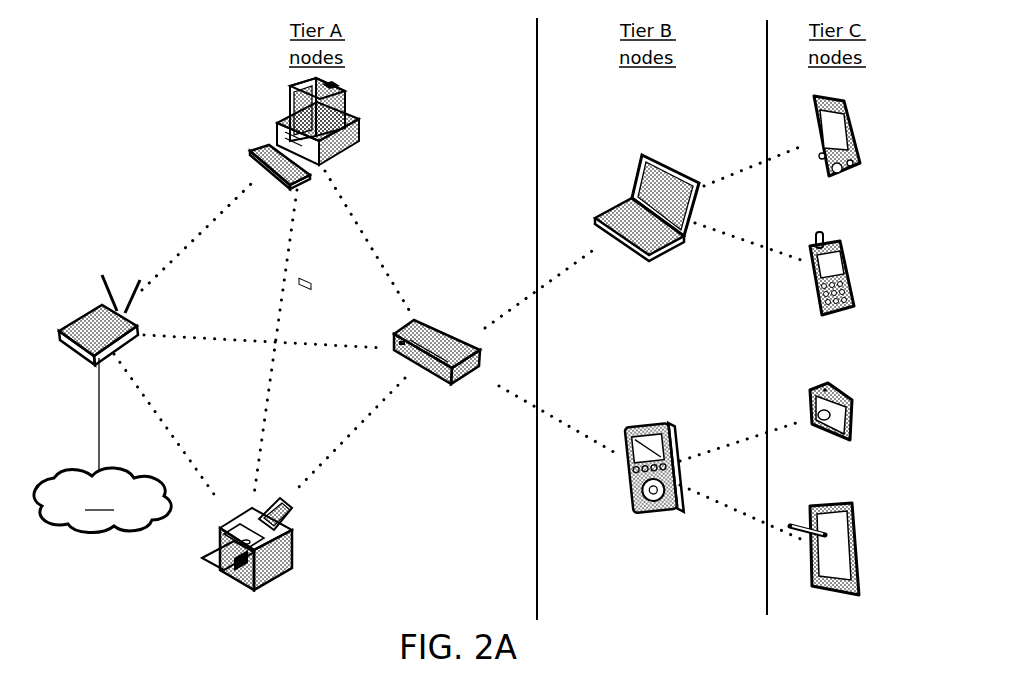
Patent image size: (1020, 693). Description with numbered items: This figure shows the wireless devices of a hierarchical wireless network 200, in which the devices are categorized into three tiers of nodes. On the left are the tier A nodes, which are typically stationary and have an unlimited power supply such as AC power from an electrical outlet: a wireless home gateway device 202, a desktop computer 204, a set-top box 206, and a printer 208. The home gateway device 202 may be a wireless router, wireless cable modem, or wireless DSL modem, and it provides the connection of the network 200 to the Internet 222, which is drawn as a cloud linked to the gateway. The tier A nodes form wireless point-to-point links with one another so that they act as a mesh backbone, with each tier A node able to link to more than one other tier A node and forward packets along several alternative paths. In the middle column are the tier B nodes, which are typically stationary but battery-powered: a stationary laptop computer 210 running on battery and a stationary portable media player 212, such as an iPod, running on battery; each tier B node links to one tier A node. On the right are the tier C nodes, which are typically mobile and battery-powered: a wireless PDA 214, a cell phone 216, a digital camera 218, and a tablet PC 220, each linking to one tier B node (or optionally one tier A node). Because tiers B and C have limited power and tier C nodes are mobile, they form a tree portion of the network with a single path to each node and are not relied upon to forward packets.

The hierarchical wireless network 200 is at (106, 106).
The wireless home gateway device 202 is at (80, 319).
The desktop computer 204 is at (348, 128).
The set-top box 206 is at (428, 324).
The printer 208 is at (280, 578).
The stationary laptop computer 210 is at (662, 162).
The stationary portable media player 212 is at (657, 517).
The wireless PDA 214 is at (843, 107).
The cell phone 216 is at (837, 249).
The digital camera 218 is at (842, 396).
The tablet PC 220 is at (843, 516).
The Internet 222 is at (102, 500).